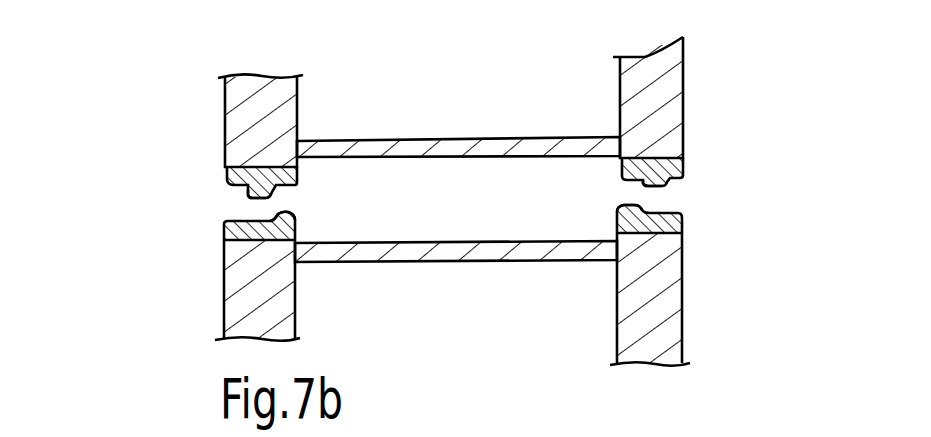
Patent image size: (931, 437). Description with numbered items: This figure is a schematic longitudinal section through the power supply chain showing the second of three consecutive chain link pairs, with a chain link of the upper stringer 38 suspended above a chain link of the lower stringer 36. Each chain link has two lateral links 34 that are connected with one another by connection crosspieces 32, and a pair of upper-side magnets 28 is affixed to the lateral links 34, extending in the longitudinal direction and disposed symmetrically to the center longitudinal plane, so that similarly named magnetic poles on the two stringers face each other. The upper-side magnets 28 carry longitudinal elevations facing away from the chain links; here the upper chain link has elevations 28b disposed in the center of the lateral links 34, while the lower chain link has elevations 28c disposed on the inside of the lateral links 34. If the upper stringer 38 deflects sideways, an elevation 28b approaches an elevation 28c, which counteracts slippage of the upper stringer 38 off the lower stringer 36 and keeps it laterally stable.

The upper-side magnets 28 is at (683, 223).
The elevations 28b is at (248, 198).
The elevations 28c is at (270, 214).
The connection crosspieces 32 is at (410, 158).
The lateral links 34 is at (683, 288).
The lower stringer 36 is at (488, 267).
The upper stringer 38 is at (521, 108).